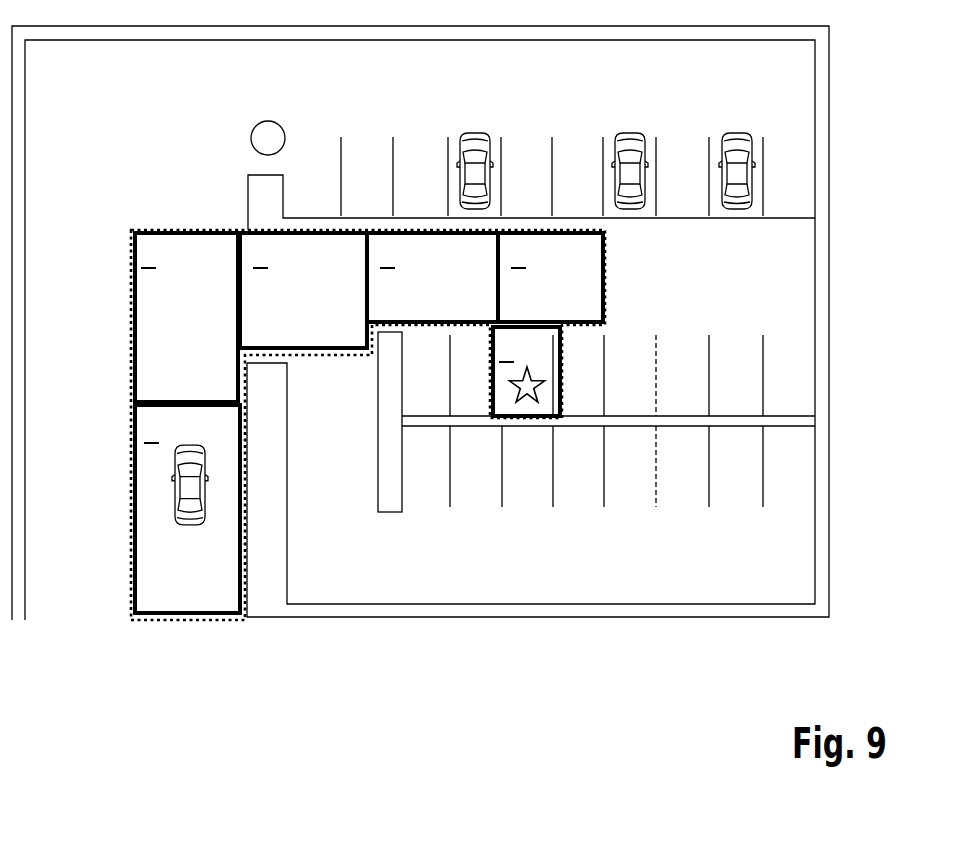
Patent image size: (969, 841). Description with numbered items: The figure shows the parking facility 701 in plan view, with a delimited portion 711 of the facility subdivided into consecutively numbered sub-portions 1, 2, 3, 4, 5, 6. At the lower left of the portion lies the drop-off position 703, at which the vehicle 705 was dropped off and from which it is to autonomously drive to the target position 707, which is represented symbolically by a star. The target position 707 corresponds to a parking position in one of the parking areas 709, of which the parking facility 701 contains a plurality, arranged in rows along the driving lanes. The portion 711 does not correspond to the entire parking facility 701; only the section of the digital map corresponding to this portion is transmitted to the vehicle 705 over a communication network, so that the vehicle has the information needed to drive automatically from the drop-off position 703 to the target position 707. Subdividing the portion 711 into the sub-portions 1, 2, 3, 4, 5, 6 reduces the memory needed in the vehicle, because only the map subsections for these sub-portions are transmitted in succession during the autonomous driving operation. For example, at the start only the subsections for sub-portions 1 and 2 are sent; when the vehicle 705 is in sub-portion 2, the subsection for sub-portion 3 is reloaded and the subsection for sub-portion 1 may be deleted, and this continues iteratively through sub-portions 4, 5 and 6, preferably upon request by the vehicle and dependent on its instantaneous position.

The parking facility 701 is at (121, 148).
The drop-off position 703 is at (159, 507).
The vehicle 705 is at (197, 524).
The target position 707 is at (524, 366).
The parking area 709 is at (312, 178).
The portion 711 is at (332, 358).
The sub-portion 1 is at (159, 473).
The sub-portion 2 is at (186, 317).
The sub-portion 3 is at (303, 290).
The sub-portion 4 is at (432, 277).
The sub-portion 5 is at (550, 277).
The sub-portion 6 is at (526, 371).